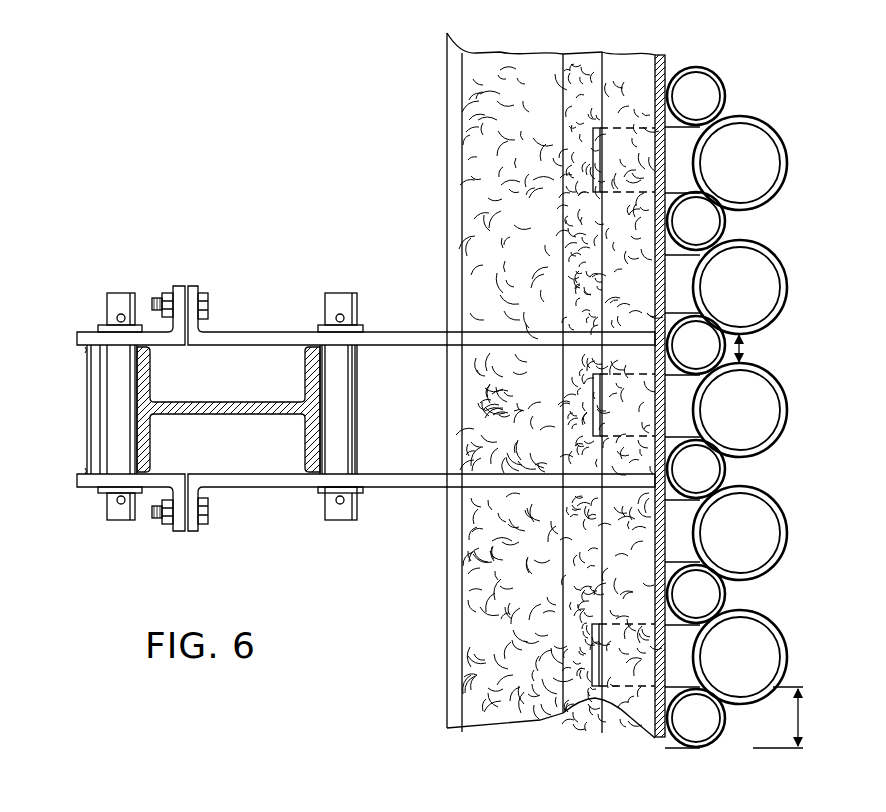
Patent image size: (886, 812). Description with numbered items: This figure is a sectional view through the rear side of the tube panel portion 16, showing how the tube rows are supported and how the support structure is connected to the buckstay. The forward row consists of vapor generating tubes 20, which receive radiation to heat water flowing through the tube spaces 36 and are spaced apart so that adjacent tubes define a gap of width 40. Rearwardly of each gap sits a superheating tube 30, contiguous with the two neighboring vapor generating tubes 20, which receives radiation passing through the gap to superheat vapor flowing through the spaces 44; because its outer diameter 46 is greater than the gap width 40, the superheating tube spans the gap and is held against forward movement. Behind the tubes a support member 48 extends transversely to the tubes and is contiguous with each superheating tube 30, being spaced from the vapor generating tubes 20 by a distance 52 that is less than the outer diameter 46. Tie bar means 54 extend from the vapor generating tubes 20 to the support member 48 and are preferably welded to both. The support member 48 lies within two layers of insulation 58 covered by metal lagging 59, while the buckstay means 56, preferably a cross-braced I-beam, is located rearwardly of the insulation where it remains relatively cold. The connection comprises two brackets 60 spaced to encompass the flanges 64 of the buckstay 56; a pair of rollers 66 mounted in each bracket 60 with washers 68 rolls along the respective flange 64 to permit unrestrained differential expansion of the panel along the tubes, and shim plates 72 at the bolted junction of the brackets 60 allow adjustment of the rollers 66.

The tube panel portion 16 is at (737, 398).
The vapor generating tubes 20 is at (782, 263).
The superheating tubes 30 is at (726, 99).
The tube spaces 36 is at (760, 640).
The gap width 40 is at (743, 340).
The spaces 44 is at (702, 732).
The outer diameter 46 is at (795, 728).
The support member 48 is at (670, 60).
The distance 52 is at (692, 163).
The tie bar means 54 is at (682, 673).
The buckstay means 56 is at (232, 403).
The insulation 58 is at (502, 75).
The metal lagging 59 is at (457, 72).
The brackets 60 is at (92, 330).
The flanges 64 is at (137, 370).
The rollers 66 is at (122, 413).
The washers 68 is at (105, 489).
The shim plates 72 is at (182, 532).